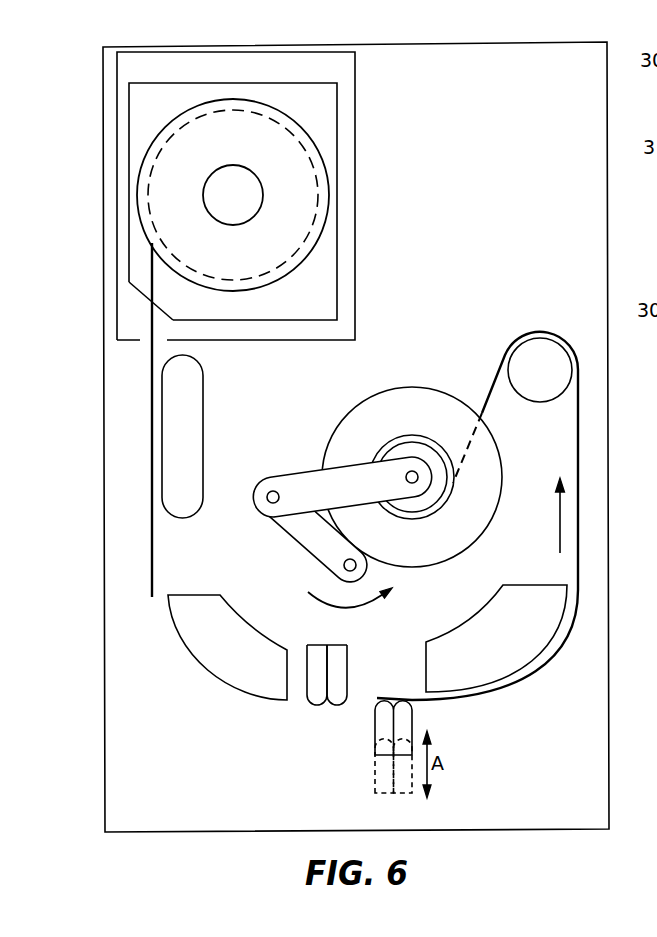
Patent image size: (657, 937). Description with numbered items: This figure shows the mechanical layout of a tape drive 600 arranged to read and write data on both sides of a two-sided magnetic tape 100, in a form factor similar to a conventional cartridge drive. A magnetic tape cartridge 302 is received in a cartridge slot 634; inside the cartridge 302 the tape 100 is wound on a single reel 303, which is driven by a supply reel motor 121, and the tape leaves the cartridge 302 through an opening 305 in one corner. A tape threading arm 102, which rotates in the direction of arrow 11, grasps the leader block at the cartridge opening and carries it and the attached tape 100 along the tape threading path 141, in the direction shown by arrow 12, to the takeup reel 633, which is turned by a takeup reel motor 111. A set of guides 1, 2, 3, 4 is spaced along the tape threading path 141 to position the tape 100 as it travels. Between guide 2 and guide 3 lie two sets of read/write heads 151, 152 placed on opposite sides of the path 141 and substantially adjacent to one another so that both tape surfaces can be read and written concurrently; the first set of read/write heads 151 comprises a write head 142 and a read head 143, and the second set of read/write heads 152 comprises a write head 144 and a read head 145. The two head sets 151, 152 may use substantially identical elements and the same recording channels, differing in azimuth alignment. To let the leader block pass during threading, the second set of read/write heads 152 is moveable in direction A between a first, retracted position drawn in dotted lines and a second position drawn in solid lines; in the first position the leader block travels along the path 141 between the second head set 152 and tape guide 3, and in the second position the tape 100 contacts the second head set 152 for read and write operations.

The tape drive 600 is at (608, 508).
The magnetic tape cartridge 302 is at (178, 83).
The cartridge slot 634 is at (355, 243).
The opening 305 is at (140, 292).
The reel 303 is at (316, 130).
The supply reel motor 121 is at (264, 194).
The magnetic tape 100 is at (150, 362).
The tape threading path 141 is at (158, 538).
The guide 1 is at (178, 430).
The guide 4 is at (558, 363).
The takeup reel 633 is at (420, 406).
The takeup reel motor 111 is at (432, 471).
The tape threading arm 102 is at (297, 483).
The arrow 12 is at (560, 518).
The arrow 11 is at (338, 608).
The guide 2 is at (197, 640).
The tape guide 3 is at (517, 637).
The write head 142 is at (318, 704).
The read head 143 is at (333, 707).
The first set of read/write heads 151 is at (343, 658).
The second set of read/write heads 152 is at (413, 715).
The write head 144 is at (377, 767).
The read head 145 is at (405, 760).